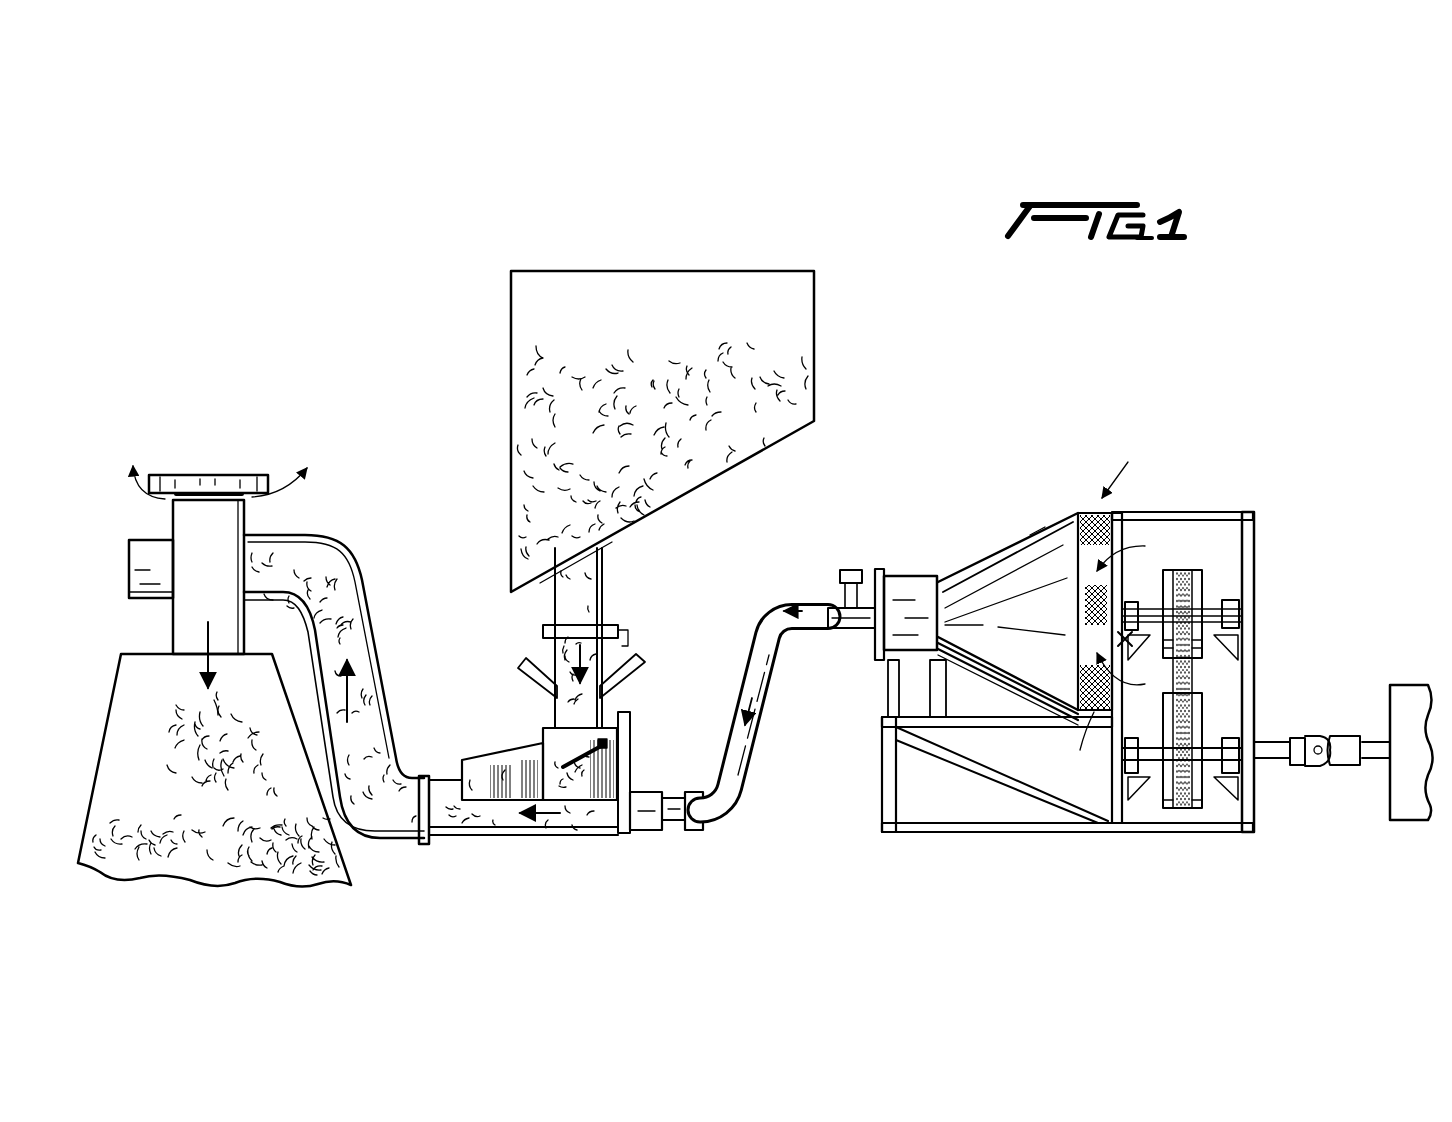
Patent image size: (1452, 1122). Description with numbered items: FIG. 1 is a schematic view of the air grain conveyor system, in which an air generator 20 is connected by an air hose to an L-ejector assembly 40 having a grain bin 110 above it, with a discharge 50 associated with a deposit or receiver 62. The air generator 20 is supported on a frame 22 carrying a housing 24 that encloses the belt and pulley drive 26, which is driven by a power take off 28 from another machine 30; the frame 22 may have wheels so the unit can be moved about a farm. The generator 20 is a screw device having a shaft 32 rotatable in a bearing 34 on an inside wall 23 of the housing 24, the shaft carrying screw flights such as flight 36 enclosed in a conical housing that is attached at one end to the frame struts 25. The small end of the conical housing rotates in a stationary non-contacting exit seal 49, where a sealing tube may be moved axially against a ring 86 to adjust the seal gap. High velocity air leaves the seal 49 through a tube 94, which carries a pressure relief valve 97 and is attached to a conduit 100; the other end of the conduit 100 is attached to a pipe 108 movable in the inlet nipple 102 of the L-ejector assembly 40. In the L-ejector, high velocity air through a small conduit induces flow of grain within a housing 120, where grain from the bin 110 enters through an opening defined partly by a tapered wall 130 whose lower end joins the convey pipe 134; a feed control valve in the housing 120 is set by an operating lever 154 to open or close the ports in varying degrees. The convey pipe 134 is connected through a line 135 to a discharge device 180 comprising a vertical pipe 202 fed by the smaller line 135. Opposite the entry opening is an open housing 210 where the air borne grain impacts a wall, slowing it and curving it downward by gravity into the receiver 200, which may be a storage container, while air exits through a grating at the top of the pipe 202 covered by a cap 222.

The air generator 20 is at (1026, 511).
The frame 22 is at (1018, 833).
The inside wall 23 is at (1130, 730).
The housing 24 is at (1257, 622).
The frame struts 25 is at (950, 682).
The belt and pulley drive 26 is at (1199, 675).
The power take off 28 is at (1345, 738).
The machine 30 is at (1403, 685).
The shaft 32 is at (1150, 607).
The bearing 34 is at (1126, 641).
The flight 36 is at (1230, 600).
The L-ejector assembly 40 is at (643, 698).
The exit seal 49 is at (906, 566).
The discharge 50 is at (222, 463).
The receiver 62 is at (132, 757).
The ring 86 is at (873, 648).
The tube 94 is at (833, 603).
The pressure relief valve 97 is at (851, 569).
The conduit 100 is at (768, 705).
The inlet nipple 102 is at (652, 791).
The pipe 108 is at (681, 831).
The grain bin 110 is at (817, 333).
The housing 120 is at (604, 834).
The tapered wall 130 is at (500, 752).
The convey pipe 134 is at (425, 776).
The line 135 is at (360, 572).
The operating lever 154 is at (543, 748).
The discharge device 180 is at (222, 535).
The receiver 200 is at (214, 752).
The vertical pipe 202 is at (246, 503).
The open housing 210 is at (131, 549).
The cap 222 is at (268, 472).